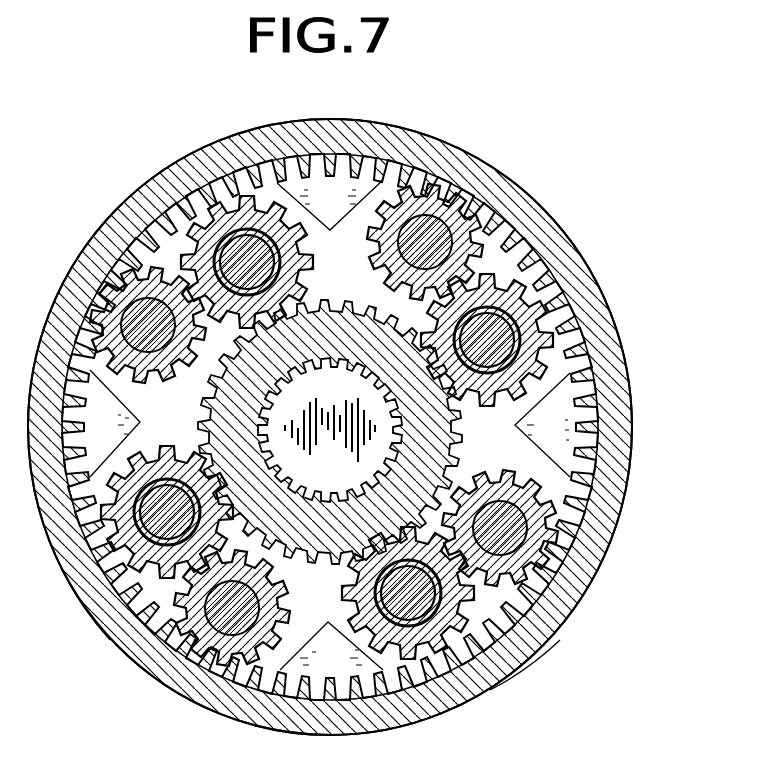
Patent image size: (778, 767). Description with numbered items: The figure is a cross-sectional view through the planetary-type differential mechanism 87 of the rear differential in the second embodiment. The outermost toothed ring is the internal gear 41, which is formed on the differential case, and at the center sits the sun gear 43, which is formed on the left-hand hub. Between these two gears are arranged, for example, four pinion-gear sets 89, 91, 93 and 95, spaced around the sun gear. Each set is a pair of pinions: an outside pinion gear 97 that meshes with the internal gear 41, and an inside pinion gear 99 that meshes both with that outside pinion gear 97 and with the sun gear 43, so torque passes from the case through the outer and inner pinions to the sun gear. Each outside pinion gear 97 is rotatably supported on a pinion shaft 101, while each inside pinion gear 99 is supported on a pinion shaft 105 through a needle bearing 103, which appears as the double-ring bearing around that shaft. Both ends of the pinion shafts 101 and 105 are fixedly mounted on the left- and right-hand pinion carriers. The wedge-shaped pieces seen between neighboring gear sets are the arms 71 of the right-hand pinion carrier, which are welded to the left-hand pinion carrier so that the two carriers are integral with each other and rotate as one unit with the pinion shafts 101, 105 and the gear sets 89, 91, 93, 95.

The differential mechanism 87 is at (505, 120).
The internal gear 41 is at (627, 352).
The pinion-gear set 91 is at (130, 180).
The pinion-gear set 89 is at (566, 227).
The pinion-gear set 93 is at (93, 613).
The pinion-gear set 95 is at (526, 662).
The arm 71 is at (314, 208).
The sun gear 43 is at (330, 432).
The needle bearing 103 is at (326, 333).
The pinion shaft 101 is at (134, 337).
The pinion shaft 105 is at (233, 274).
The outside pinion gear 97 is at (143, 233).
The inside pinion gear 99 is at (306, 263).